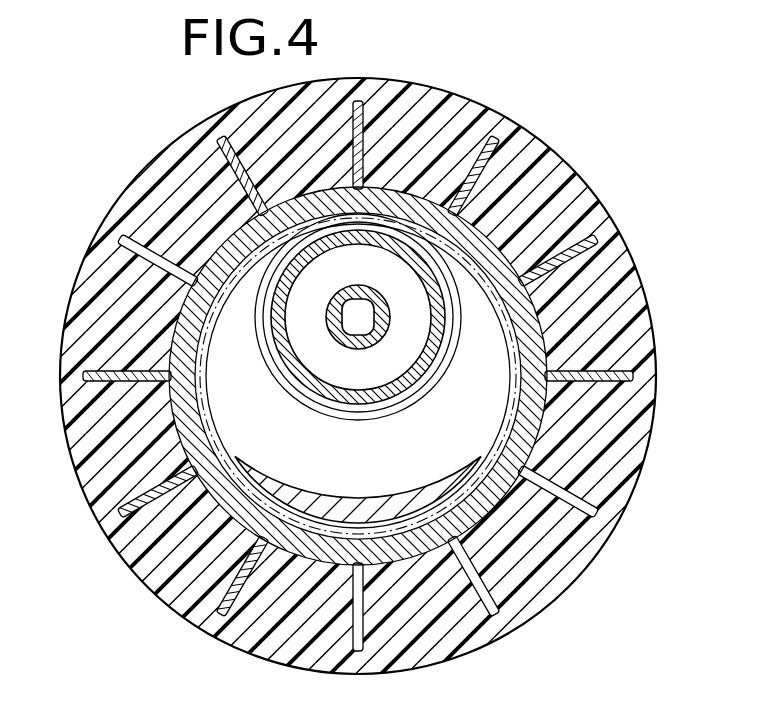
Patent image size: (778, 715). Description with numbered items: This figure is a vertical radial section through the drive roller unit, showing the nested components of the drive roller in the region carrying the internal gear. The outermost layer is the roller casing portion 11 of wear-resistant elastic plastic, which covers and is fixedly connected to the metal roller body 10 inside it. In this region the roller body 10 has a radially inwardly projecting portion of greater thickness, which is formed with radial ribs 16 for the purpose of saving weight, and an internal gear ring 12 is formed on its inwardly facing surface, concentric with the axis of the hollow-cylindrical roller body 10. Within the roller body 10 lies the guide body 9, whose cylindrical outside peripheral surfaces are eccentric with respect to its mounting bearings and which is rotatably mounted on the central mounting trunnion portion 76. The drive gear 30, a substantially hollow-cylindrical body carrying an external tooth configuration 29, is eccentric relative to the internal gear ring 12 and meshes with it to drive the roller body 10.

The guide body 9 is at (390, 507).
The roller body 10 is at (560, 320).
The roller casing portion 11 is at (553, 202).
The internal gear ring 12 is at (210, 446).
The radial ribs 16 is at (485, 170).
The external tooth configuration 29 is at (262, 345).
The drive gear 30 is at (353, 400).
The mounting trunnion portion 76 is at (378, 337).